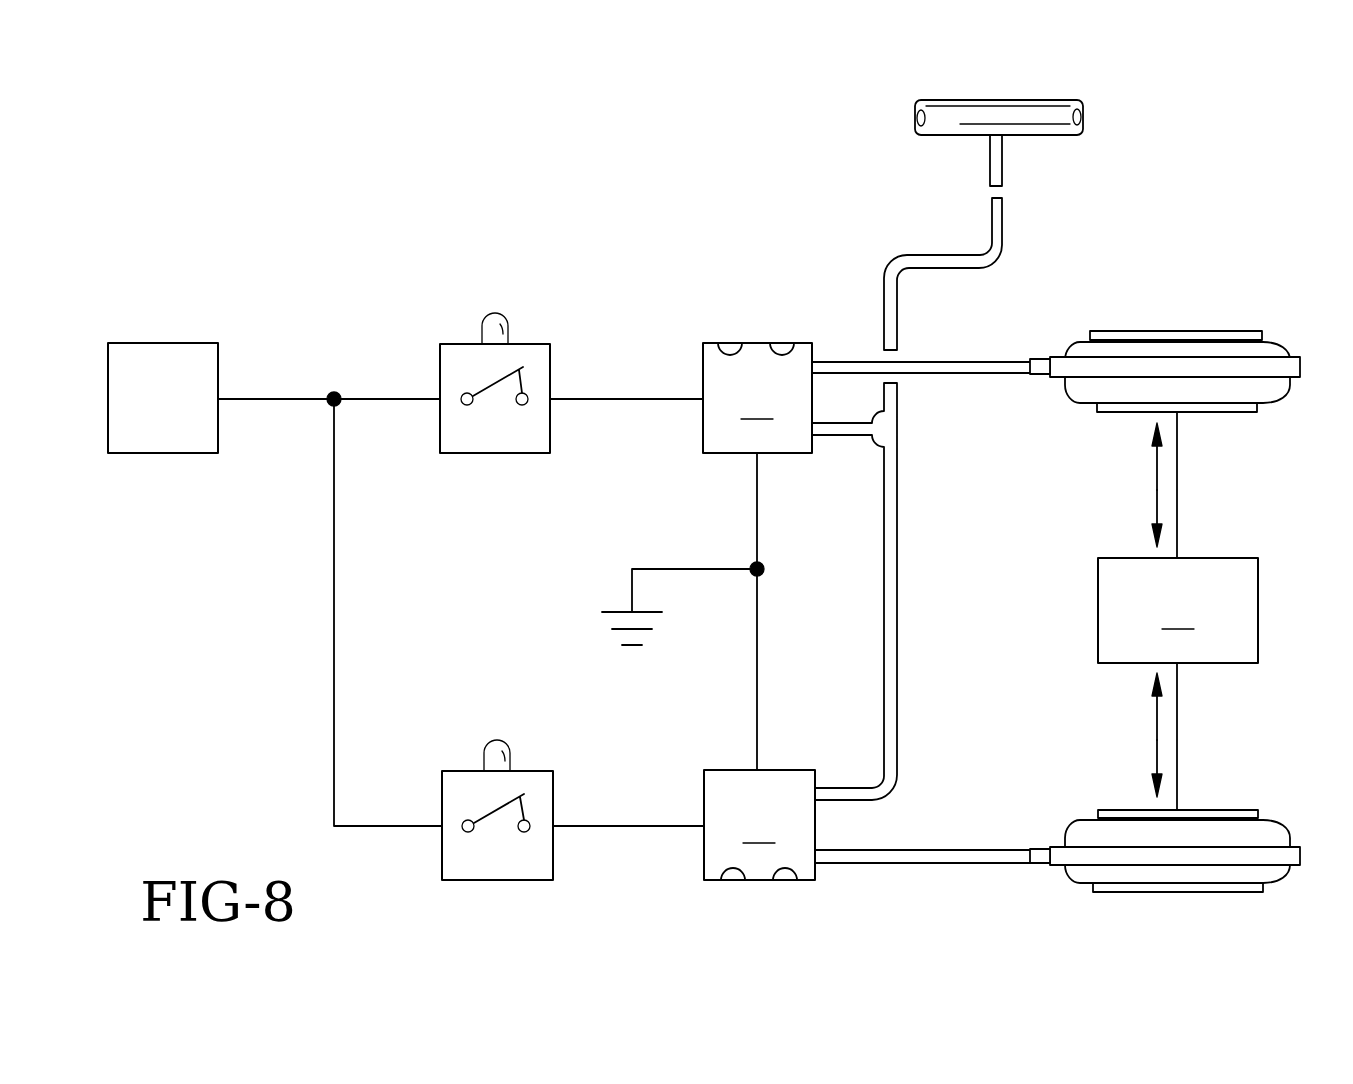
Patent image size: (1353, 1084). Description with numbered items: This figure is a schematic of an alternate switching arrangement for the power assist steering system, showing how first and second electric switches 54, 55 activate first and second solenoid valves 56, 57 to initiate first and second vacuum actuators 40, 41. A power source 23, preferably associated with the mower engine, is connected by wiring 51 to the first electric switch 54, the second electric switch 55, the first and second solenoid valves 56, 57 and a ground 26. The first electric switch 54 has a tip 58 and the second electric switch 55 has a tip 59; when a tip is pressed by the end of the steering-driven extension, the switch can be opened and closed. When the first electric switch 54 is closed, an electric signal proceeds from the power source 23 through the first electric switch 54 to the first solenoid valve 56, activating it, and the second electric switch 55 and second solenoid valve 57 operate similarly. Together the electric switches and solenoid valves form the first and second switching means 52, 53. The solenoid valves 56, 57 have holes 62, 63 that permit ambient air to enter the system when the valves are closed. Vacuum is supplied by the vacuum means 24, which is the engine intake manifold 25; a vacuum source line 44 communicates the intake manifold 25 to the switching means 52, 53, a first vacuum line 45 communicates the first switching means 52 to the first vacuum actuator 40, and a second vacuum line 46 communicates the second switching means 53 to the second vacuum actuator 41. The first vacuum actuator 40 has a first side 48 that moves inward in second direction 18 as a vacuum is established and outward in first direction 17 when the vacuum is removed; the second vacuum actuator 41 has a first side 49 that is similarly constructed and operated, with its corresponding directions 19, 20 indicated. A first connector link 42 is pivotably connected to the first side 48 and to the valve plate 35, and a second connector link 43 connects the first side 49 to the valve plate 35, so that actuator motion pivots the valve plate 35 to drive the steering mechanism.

The first direction 17 is at (1157, 510).
The second direction 18 is at (1157, 461).
The direction of wheel movement 19 is at (1157, 711).
The direction of wheel movement 20 is at (1157, 760).
The power source 23 is at (147, 419).
The vacuum means 24 is at (1001, 143).
The intake manifold 25 is at (1045, 122).
The ground 26 is at (617, 610).
The valve plate 35 is at (1178, 610).
The first vacuum actuator 40 is at (1183, 374).
The second vacuum actuator 41 is at (1183, 847).
The first connector link 42 is at (1177, 483).
The second connector link 43 is at (1177, 735).
The vacuum source line 44 is at (1000, 233).
The first vacuum line 45 is at (965, 375).
The second vacuum line 46 is at (970, 850).
The first side 48 is at (1222, 418).
The first side 49 is at (1228, 802).
The wiring 51 is at (280, 396).
The first switching means 52 is at (611, 369).
The second switching means 53 is at (615, 854).
The first electric switch 54 is at (492, 424).
The second electric switch 55 is at (495, 852).
The first solenoid valve 56 is at (757, 398).
The second solenoid valve 57 is at (759, 825).
The tip 58 is at (494, 330).
The tip 59 is at (497, 758).
The hole 62 is at (782, 340).
The hole 63 is at (785, 884).